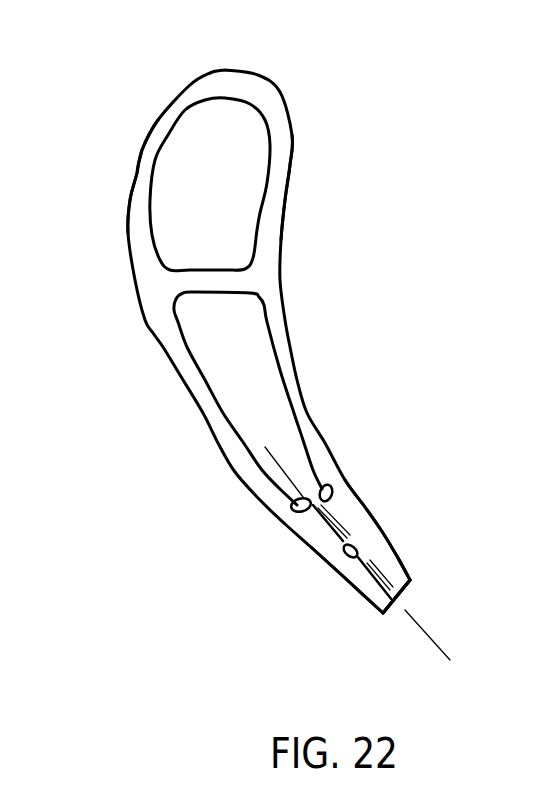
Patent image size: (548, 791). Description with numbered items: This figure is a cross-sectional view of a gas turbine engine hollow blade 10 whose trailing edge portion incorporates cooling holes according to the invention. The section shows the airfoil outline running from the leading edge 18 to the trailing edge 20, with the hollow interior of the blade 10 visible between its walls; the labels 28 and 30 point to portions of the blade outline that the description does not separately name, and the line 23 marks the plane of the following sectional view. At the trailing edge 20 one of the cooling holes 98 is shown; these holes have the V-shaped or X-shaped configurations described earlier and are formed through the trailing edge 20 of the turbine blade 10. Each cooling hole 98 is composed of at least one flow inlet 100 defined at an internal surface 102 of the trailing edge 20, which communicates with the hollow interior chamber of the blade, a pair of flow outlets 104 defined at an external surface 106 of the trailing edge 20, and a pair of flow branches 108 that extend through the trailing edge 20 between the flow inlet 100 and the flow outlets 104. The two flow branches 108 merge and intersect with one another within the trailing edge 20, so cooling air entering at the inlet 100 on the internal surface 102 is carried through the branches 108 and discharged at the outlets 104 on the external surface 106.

The hollow blade 10 is at (312, 112).
The leading edge 18 is at (257, 72).
The trailing edge 20 is at (383, 531).
The section line 23- 23 is at (454, 609).
The right side rail 28 is at (287, 182).
The left side rail 30 is at (130, 177).
The cooling holes 98 is at (345, 523).
The flow inlet 100 is at (293, 508).
The internal surface 102 is at (332, 486).
The flow outlets 104 is at (396, 604).
The external surface 106 is at (407, 592).
The flow branches 108 is at (348, 558).